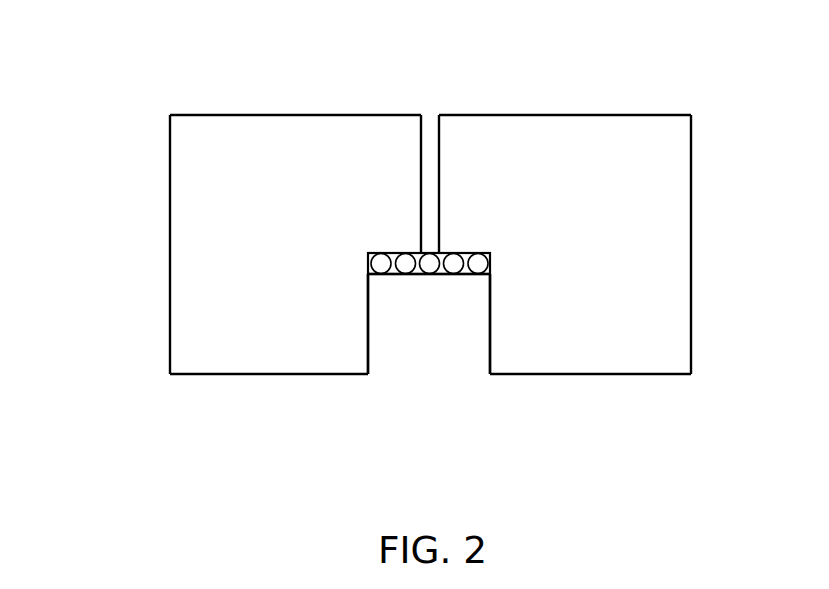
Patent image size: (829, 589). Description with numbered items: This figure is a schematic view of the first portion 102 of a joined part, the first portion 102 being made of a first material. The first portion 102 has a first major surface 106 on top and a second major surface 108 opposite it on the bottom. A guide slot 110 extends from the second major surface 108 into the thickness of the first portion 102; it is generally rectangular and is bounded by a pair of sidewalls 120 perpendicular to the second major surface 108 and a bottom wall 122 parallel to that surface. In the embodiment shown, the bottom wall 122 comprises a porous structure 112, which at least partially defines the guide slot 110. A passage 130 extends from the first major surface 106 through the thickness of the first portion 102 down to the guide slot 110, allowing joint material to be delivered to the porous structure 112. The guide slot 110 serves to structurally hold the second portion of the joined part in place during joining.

The first portion 102 is at (683, 198).
The first major surface 106 is at (630, 113).
The second major surface 108 is at (657, 375).
The guide slot 110 is at (408, 350).
The porous structure 112 is at (368, 265).
The pair of sidewalls 120 is at (368, 322).
The bottom wall 122 is at (396, 253).
The passage 130 is at (431, 118).